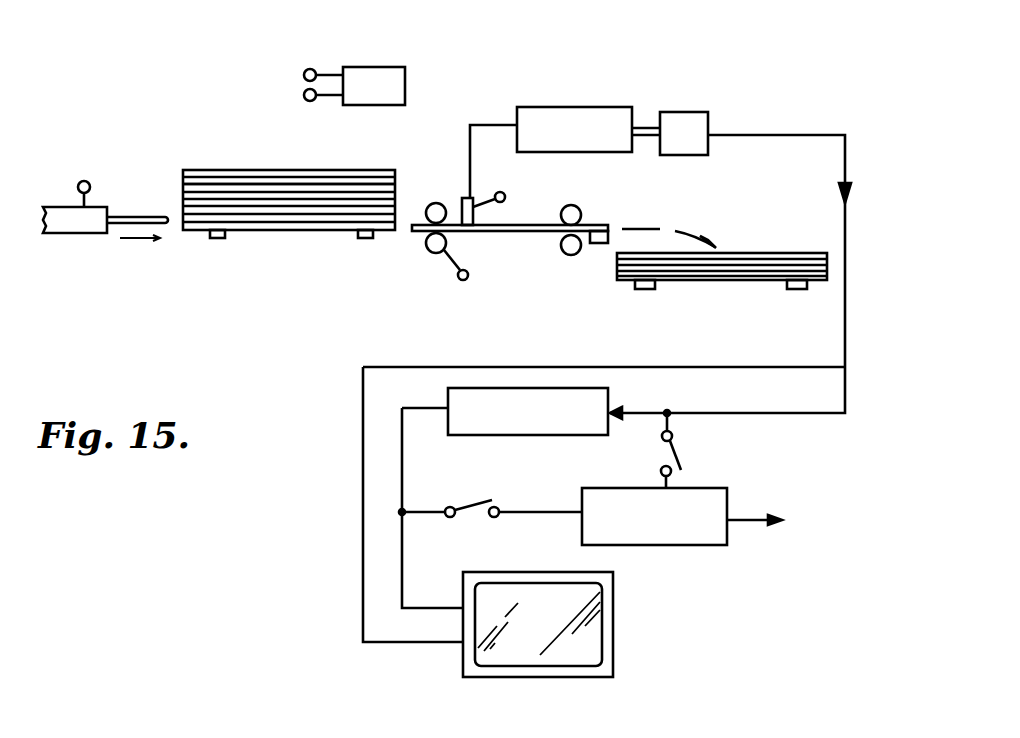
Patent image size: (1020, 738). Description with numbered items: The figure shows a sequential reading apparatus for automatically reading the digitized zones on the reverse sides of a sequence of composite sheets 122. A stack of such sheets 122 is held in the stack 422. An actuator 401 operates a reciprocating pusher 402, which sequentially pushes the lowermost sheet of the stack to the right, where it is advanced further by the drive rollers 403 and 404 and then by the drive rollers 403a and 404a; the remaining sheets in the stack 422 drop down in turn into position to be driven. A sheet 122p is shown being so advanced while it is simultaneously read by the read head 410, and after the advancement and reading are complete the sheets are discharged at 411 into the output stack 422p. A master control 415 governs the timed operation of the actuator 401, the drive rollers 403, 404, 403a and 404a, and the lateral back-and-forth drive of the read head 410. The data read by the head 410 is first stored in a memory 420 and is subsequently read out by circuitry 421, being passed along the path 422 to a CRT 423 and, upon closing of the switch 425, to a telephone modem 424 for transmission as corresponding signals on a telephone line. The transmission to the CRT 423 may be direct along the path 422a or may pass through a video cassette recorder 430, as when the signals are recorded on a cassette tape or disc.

The actuator 401 is at (75, 222).
The reciprocating pusher 402 is at (133, 216).
The stack of sheets 422 is at (216, 160).
The composite sheet 122 is at (285, 196).
The master control 415 is at (387, 77).
The drive roller 403 is at (432, 203).
The drive roller 404 is at (425, 245).
The read head 410 is at (476, 204).
The advanced sheet 122p is at (500, 232).
The drive roller 403a is at (576, 208).
The drive roller 404a is at (575, 255).
The memory 420 is at (556, 107).
The circuitry 421 is at (688, 118).
The discharge 411 is at (700, 232).
The output stack 422p is at (800, 226).
The direct transmission path 422a is at (416, 366).
The video cassette recorder 430 is at (477, 425).
The switch 425 is at (677, 455).
The telephone modem 424 is at (705, 548).
The CRT 423 is at (613, 645).